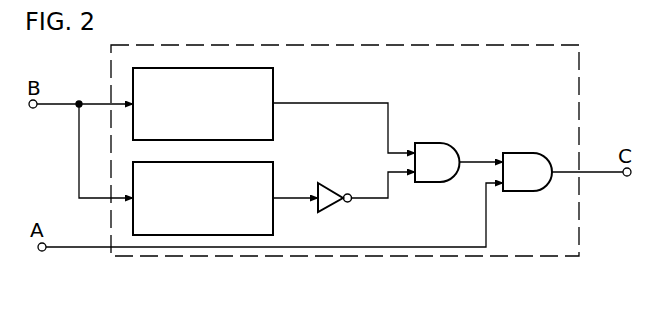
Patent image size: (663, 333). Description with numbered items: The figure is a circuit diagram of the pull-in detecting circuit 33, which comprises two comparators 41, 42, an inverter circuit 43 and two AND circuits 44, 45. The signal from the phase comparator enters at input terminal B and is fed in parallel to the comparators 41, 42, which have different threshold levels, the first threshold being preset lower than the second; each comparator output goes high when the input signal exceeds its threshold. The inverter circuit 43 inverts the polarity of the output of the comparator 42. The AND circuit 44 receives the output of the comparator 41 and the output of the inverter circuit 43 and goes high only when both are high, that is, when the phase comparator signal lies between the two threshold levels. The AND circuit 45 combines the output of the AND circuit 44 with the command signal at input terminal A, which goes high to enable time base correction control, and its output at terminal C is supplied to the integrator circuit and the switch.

The pull-in detecting circuit 33 is at (473, 48).
The comparator 41 is at (275, 86).
The comparator 42 is at (275, 180).
The inverter circuit 43 is at (336, 190).
The AND circuit 44 is at (432, 143).
The AND circuit 45 is at (533, 153).